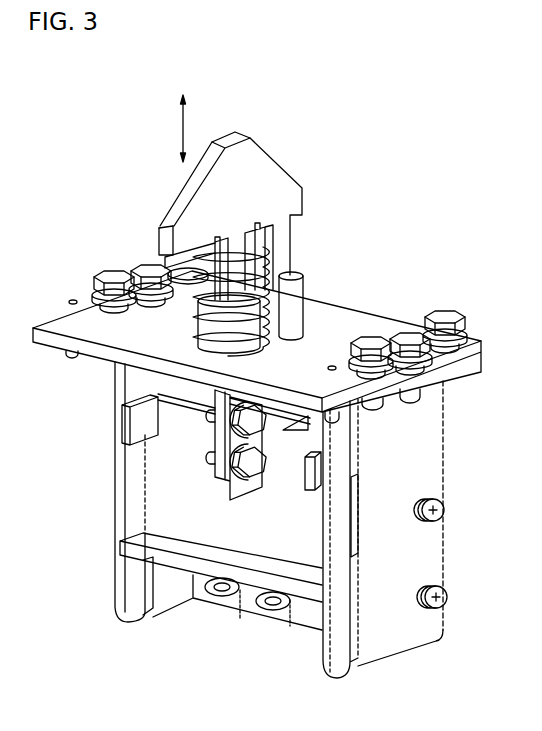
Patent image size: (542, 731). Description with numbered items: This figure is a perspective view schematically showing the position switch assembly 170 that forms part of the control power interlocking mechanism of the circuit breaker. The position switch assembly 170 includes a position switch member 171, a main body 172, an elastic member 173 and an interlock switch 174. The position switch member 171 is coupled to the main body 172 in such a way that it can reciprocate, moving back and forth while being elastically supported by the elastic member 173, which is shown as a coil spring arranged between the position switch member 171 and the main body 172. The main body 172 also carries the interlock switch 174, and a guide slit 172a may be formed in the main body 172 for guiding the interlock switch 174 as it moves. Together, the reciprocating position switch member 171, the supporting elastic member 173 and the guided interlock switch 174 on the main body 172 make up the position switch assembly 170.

The position switch assembly 170 is at (129, 82).
The position switch member 171 is at (261, 168).
The main body 172 is at (324, 318).
The guide slit 172a is at (353, 597).
The elastic member 173 is at (263, 265).
The interlock switch 174 is at (159, 473).